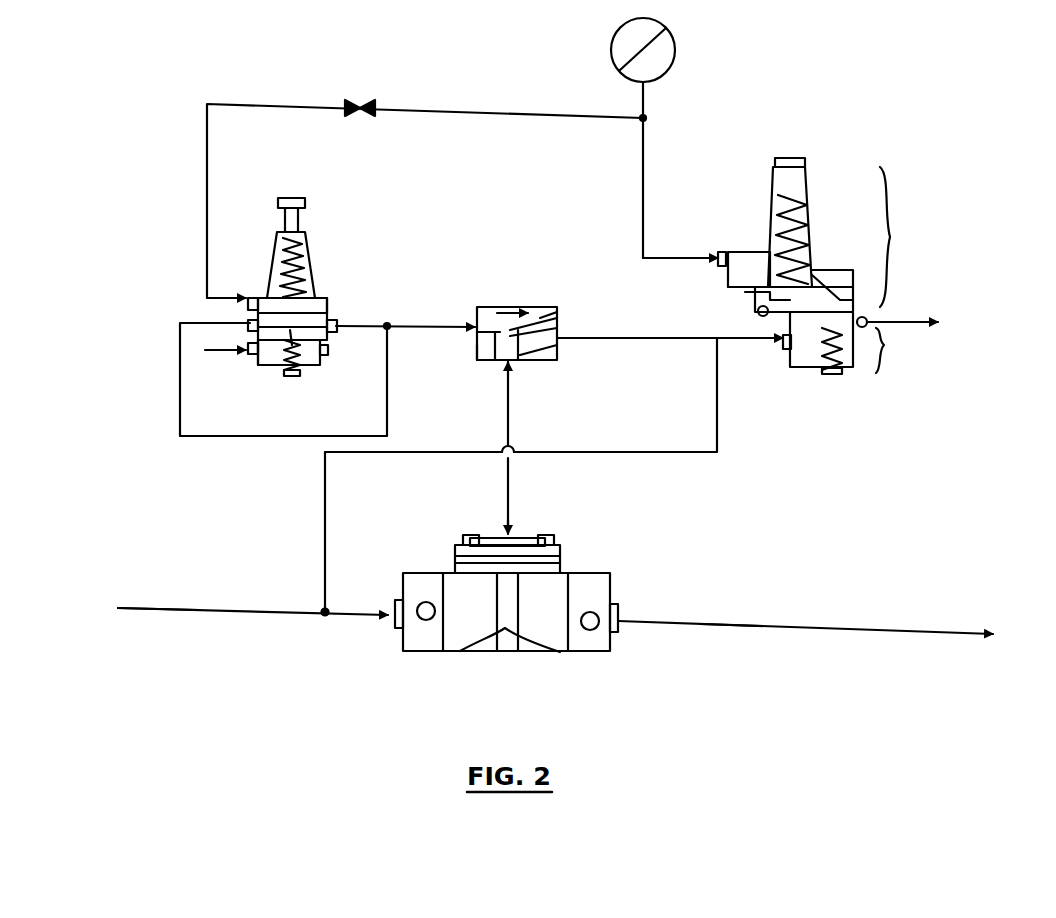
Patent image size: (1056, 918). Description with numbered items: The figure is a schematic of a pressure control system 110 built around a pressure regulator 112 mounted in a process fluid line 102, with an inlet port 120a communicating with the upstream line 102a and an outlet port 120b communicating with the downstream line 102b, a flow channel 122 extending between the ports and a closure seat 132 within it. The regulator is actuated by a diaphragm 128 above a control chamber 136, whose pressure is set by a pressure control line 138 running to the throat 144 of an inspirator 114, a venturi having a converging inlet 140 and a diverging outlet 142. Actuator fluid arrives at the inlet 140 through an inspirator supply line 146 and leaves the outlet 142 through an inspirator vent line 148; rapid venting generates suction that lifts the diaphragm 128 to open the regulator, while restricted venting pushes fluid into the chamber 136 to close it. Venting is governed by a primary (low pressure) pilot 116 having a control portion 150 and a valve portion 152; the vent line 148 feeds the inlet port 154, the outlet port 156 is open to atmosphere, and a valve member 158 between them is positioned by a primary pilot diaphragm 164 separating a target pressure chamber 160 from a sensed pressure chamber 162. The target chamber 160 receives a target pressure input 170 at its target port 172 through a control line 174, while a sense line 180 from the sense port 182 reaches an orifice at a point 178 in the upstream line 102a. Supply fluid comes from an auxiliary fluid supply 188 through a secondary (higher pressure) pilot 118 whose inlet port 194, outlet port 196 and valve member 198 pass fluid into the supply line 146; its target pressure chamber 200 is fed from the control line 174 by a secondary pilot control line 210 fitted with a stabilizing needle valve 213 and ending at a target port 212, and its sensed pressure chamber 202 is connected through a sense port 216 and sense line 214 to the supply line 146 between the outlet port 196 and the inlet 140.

The process fluid line 102 is at (920, 610).
The upstream line 102a is at (195, 612).
The downstream line 102b is at (718, 626).
The pressure control system 110 is at (955, 130).
The pressure regulator 112 is at (521, 613).
The inspirator 114 is at (568, 300).
The primary (low pressure) pilot 116 is at (808, 289).
The secondary (higher pressure) pilot 118 is at (295, 310).
The inlet port 120a is at (398, 628).
The outlet port 120b is at (618, 612).
The flow channel 122 is at (470, 625).
The diaphragm 128 is at (478, 540).
The valve seat 132 is at (510, 645).
The control chamber 136 is at (548, 548).
The pressure control line 138 is at (512, 478).
The converging inlet 140 is at (495, 362).
The diverging outlet 142 is at (560, 322).
The throat 144 is at (530, 362).
The inspirator supply line 146 is at (433, 322).
The inspirator vent line 148 is at (645, 340).
The control portion 150 is at (909, 237).
The valve portion 152 is at (903, 347).
The inlet port 154 is at (785, 350).
The outlet port 156 is at (870, 318).
The valve member 158 is at (840, 370).
The target pressure chamber 160 is at (812, 248).
The sensed pressure chamber 162 is at (745, 300).
The primary pilot diaphragm 164 is at (822, 288).
The target (or control) pressure input 170 is at (666, 75).
The target port 172 is at (718, 252).
The control line 174 is at (660, 155).
The point 178 is at (322, 605).
The sense line 180 is at (325, 508).
The sense port 182 is at (757, 312).
The auxiliary fluid supply 188 is at (215, 352).
The inlet port 194 is at (262, 355).
The outlet port 196 is at (337, 330).
The valve member 198 is at (295, 348).
The target pressure chamber 200 is at (335, 290).
The sensed pressure chamber 202 is at (250, 325).
The secondary pilot control line 210 is at (232, 103).
The target port 212 is at (248, 295).
The stabilizing needle valve 213 is at (362, 118).
The sense line 214 is at (205, 440).
The sense port 216 is at (248, 326).